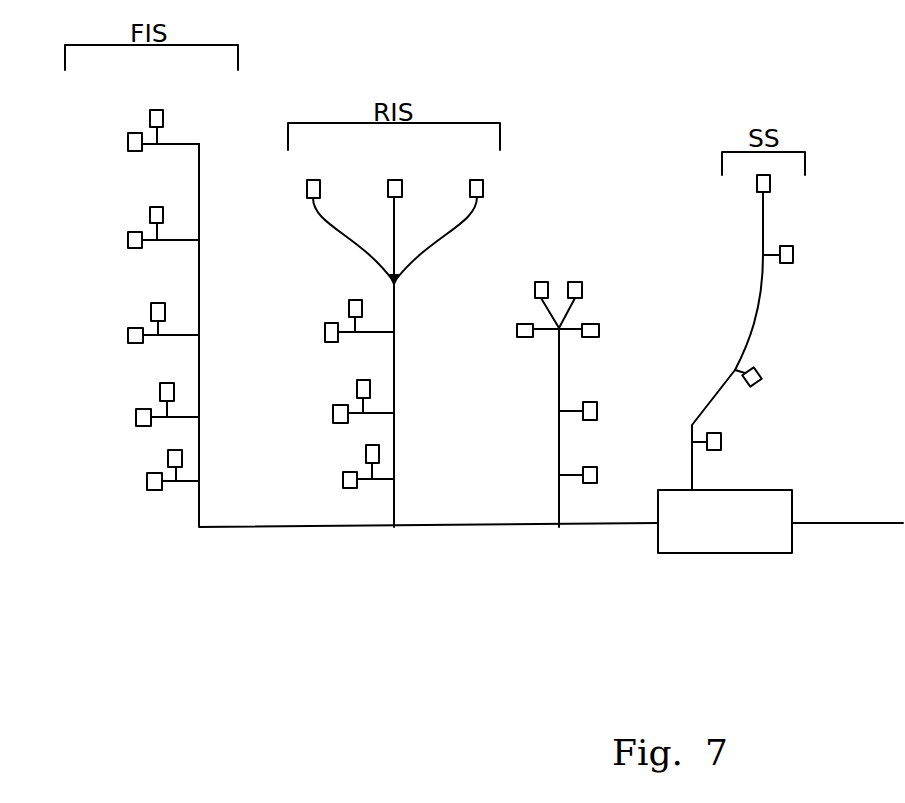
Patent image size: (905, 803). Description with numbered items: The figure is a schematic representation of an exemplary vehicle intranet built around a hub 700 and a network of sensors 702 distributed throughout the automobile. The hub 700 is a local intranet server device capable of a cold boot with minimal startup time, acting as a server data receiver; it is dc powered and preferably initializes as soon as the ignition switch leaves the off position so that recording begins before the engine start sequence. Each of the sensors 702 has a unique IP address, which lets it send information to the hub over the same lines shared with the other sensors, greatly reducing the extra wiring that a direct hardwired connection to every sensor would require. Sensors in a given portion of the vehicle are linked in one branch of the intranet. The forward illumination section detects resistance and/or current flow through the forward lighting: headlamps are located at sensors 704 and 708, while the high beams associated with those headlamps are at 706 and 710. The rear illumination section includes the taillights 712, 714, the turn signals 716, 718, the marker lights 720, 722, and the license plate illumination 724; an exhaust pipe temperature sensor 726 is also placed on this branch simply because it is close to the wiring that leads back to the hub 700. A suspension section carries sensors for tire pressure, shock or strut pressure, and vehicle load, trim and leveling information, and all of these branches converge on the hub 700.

The hub 700 is at (713, 553).
The sensors 702 is at (598, 474).
The headlamp sensor 704 is at (128, 140).
The high beam sensor 706 is at (150, 115).
The headlamp sensor 708 is at (128, 240).
The high beam sensor 710 is at (150, 210).
The taillight 712 is at (343, 481).
The taillight 714 is at (366, 452).
The turn signal 716 is at (333, 413).
The turn signal 718 is at (357, 385).
The marker light 720 is at (325, 331).
The marker light 722 is at (350, 300).
The license plate illumination 724 is at (483, 184).
The exhaust pipe temperature sensor 726 is at (307, 184).